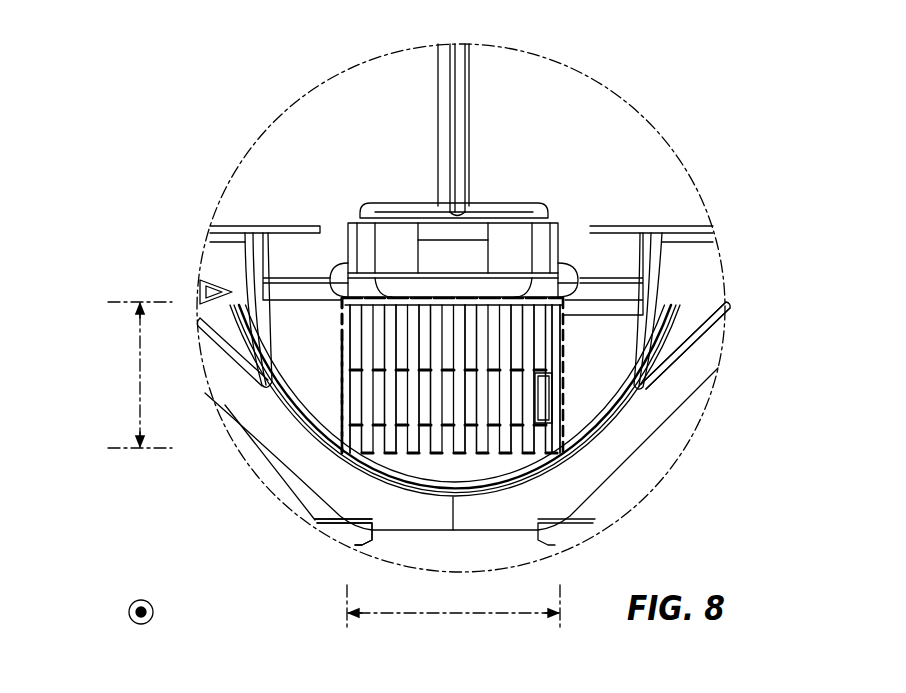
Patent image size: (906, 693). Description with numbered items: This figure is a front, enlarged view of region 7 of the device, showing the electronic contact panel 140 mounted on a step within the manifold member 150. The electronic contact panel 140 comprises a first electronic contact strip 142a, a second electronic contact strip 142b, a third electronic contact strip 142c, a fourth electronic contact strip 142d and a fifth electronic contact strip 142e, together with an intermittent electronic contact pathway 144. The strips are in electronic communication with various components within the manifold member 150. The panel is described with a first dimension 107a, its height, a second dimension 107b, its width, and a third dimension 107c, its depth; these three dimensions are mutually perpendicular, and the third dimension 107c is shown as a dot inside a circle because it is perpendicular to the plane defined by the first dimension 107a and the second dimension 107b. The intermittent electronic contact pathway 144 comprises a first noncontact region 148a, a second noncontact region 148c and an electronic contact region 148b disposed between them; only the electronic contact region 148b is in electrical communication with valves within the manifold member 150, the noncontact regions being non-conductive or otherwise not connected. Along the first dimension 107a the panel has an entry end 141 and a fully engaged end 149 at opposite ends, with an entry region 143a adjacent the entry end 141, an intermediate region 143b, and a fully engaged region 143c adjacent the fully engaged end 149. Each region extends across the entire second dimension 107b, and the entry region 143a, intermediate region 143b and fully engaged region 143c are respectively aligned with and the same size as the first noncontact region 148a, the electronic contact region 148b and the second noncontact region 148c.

The region 7 is at (360, 66).
The manifold member 150 is at (273, 80).
The electronic contact panel 140 is at (502, 107).
The entry end 141 is at (357, 298).
The first electronic contact strip 142a is at (362, 330).
The second electronic contact strip 142b is at (398, 327).
The third electronic contact strip 142c is at (433, 337).
The fourth electronic contact strip 142d is at (470, 337).
The fifth electronic contact strip 142e is at (511, 337).
The entry region 143a is at (342, 333).
The intermediate region 143b is at (347, 393).
The fully engaged region 143c is at (347, 452).
The intermittent electronic contact pathway 144 is at (550, 355).
The first noncontact region 148a is at (550, 320).
The electronic contact region 148b is at (543, 395).
The second noncontact region 148c is at (550, 440).
The fully engaged end 149 is at (348, 452).
The first dimension 107a is at (140, 393).
The second dimension 107b is at (482, 615).
The third dimension 107c is at (128, 614).